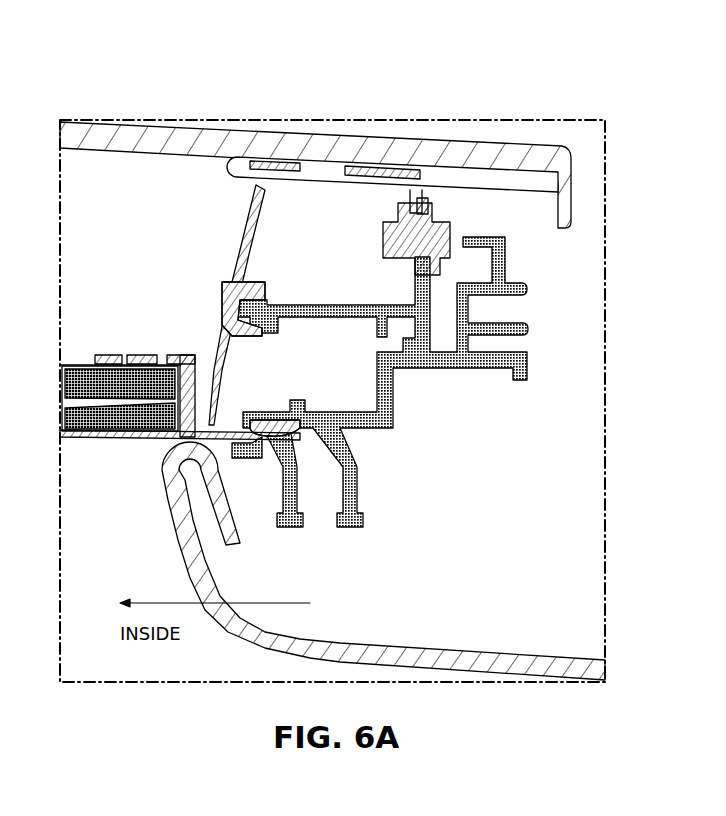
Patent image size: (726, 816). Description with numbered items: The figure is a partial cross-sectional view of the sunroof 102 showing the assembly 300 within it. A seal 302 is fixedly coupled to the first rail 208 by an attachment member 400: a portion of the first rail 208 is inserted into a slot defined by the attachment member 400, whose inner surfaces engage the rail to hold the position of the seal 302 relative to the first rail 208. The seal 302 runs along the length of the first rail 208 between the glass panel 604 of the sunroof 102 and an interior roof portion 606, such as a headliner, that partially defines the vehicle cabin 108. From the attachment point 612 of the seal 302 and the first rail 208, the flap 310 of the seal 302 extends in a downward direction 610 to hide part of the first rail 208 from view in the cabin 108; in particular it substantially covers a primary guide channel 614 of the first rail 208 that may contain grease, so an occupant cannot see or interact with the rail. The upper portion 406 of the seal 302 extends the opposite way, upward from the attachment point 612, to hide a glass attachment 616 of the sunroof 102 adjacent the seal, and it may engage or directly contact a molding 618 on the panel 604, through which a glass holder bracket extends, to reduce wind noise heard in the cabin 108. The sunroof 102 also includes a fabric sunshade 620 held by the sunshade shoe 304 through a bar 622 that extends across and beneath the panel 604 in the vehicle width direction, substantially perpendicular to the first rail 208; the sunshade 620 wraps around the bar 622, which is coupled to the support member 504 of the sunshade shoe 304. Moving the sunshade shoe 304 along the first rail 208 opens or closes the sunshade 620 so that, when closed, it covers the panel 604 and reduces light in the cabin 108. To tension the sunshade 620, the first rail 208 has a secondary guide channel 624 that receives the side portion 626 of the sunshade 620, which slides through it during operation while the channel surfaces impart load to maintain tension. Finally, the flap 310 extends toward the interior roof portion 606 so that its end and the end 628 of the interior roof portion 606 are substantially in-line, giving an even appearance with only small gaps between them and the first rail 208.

The sunroof 102 is at (612, 118).
The vehicle cabin 108 is at (178, 571).
The first rail 208 is at (396, 430).
The assembly 300 is at (519, 552).
The seal 302 is at (193, 282).
The sunshade shoe 304 is at (110, 341).
The flap 310 is at (217, 397).
The attachment member 400 is at (257, 283).
The upper portion 406 is at (250, 215).
The support member 504 is at (135, 352).
The panel 604 is at (360, 134).
The interior roof portion 606 is at (170, 507).
The direction 610 is at (304, 354).
The attachment point 612 is at (280, 294).
The primary guide channel 614 is at (372, 393).
The glass attachment 616 is at (385, 250).
The molding 618 is at (250, 184).
The sunshade 620 is at (90, 441).
The bar 622 is at (86, 362).
The secondary guide channel 624 is at (264, 416).
The side portion 626 is at (256, 448).
The end 628 is at (172, 447).